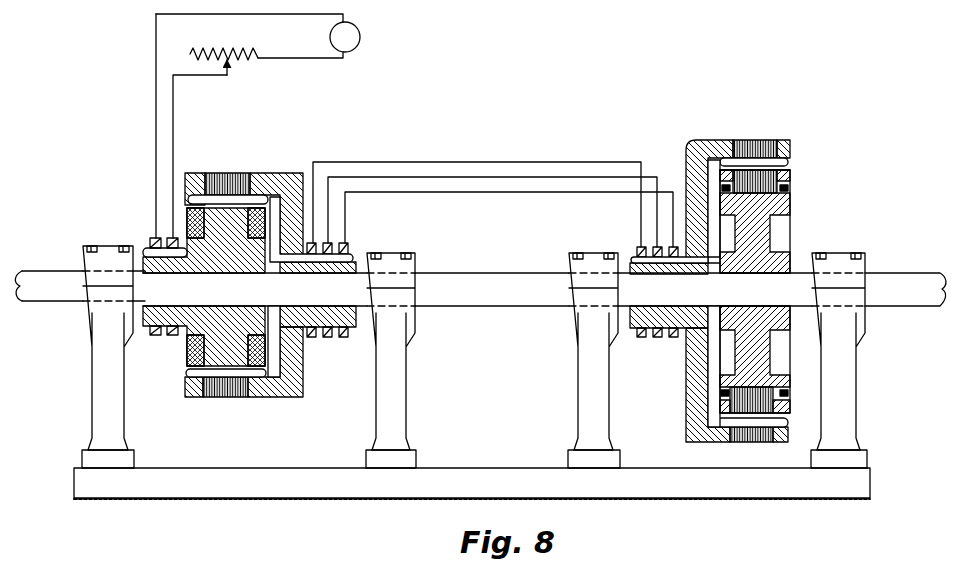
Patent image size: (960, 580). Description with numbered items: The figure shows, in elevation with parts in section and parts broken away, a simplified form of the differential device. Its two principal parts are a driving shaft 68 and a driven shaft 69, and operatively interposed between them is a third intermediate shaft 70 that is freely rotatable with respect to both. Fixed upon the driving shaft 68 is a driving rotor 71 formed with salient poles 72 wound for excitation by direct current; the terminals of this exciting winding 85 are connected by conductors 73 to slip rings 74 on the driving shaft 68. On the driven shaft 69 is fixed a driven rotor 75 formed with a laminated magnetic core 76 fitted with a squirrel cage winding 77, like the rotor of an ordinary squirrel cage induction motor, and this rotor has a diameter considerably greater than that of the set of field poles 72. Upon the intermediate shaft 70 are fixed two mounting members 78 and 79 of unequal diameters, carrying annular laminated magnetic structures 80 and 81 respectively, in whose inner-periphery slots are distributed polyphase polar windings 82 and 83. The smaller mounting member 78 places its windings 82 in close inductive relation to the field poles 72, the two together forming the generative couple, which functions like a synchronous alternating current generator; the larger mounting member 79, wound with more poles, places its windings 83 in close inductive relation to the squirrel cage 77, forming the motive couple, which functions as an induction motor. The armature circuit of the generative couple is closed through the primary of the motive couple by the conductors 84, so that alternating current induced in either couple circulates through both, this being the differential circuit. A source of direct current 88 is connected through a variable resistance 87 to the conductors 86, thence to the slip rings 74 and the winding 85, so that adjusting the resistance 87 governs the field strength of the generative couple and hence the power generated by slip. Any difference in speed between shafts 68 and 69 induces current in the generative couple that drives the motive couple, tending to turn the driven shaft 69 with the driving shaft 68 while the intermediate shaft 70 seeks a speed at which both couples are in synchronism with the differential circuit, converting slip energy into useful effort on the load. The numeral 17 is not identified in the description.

The friction facing 17 is at (794, 171).
The driving shaft 68 is at (55, 277).
The driven shaft 69 is at (902, 285).
The intermediate shaft 70 is at (495, 282).
The driving rotor 71 is at (233, 278).
The salient poles 72 is at (217, 327).
The conductors 73 is at (178, 241).
The slip rings 74 is at (153, 243).
The driven rotor 75 is at (786, 228).
The laminated magnetic core 76 is at (792, 187).
The squirrel cage winding 77 is at (792, 406).
The mounting member 78 is at (268, 172).
The mounting member 79 is at (697, 140).
The annular laminated magnetic structure 80 is at (227, 172).
The annular laminated magnetic structure 81 is at (766, 140).
The polyphase polar windings 82 is at (272, 197).
The polyphase polar windings 83 is at (792, 161).
The conductors 84 is at (439, 193).
The winding 85 is at (256, 331).
The conductors 86 is at (156, 134).
The variable resistance 87 is at (240, 66).
The source of direct current 88 is at (330, 38).